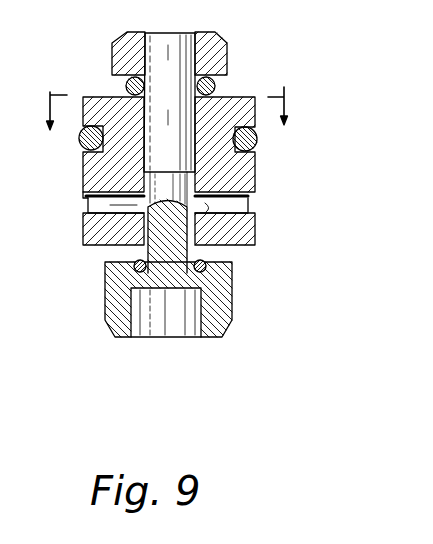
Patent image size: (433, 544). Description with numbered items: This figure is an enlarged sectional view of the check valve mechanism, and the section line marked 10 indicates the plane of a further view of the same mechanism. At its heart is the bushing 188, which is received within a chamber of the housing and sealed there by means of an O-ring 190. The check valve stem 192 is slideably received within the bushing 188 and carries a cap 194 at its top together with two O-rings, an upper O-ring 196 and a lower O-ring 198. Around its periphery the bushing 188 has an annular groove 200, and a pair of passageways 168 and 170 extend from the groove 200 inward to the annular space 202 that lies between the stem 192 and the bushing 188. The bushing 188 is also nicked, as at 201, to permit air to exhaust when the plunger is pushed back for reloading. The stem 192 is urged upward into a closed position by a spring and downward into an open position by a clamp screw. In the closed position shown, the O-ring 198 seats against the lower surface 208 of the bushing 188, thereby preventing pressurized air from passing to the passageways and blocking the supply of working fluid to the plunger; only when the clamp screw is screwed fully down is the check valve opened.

The section line 10- 10 is at (169, 108).
The passageway 168 is at (88, 206).
The passageway 170 is at (202, 243).
The bushing 188 is at (257, 175).
The O-ring 190 is at (82, 142).
The check valve stem 192 is at (208, 120).
The cap 194 is at (225, 43).
The O-ring 196 is at (122, 82).
The O-ring 198 is at (207, 264).
The annular groove 200 is at (250, 216).
The nick 201 is at (122, 100).
The annular space 202 is at (254, 190).
The lower surface 208 is at (83, 245).